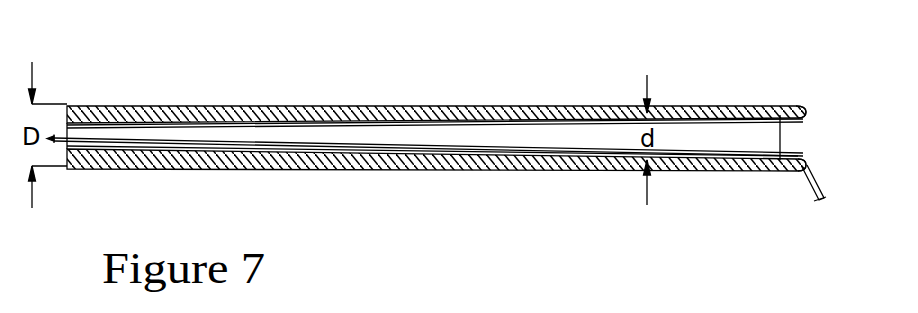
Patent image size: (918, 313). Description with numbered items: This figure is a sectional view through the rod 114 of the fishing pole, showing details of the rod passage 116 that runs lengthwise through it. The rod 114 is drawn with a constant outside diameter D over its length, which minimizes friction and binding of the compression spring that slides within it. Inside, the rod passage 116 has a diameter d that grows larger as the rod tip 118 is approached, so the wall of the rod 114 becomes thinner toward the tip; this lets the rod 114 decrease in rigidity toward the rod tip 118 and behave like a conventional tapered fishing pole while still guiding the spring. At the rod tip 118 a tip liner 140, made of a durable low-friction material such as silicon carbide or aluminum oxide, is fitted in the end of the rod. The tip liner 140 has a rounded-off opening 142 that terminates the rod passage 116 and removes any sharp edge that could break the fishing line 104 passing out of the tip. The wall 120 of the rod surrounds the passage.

The fishing line 104 is at (813, 183).
The rod 114 is at (497, 73).
The rod passage 116 is at (268, 130).
The rod tip 118 is at (788, 110).
The wall 120 is at (96, 113).
The tip liner 140 is at (803, 143).
The rounded-off opening 142 is at (797, 128).